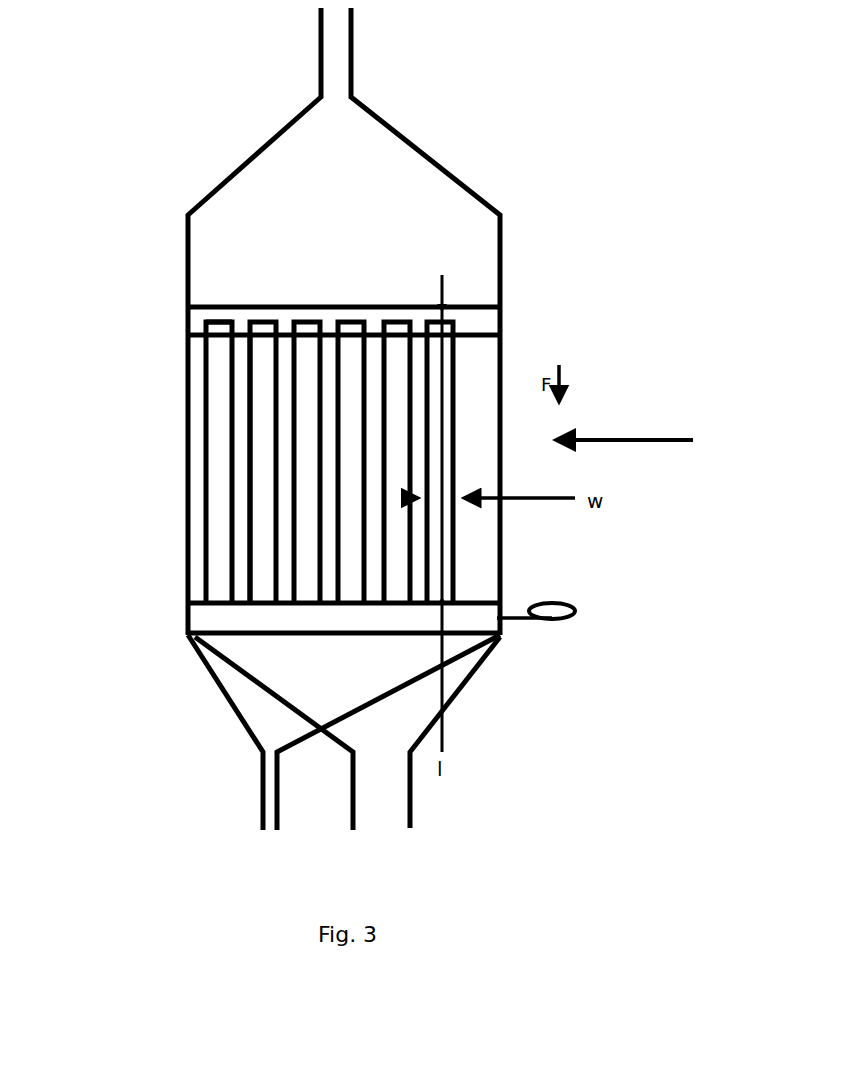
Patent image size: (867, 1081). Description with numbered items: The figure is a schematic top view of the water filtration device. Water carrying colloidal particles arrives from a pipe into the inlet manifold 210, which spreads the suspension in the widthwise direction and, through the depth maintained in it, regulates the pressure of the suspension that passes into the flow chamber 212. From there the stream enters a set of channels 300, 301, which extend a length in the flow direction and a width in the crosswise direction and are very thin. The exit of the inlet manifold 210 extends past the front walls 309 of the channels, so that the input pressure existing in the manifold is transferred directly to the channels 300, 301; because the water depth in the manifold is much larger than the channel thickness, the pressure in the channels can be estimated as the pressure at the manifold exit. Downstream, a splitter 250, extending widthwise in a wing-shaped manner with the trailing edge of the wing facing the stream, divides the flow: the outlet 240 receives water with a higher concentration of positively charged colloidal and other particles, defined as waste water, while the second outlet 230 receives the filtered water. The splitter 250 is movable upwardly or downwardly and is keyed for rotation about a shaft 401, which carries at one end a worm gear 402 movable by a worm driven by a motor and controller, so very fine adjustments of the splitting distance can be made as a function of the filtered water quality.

The inlet manifold 210 is at (382, 231).
The front walls 309 is at (218, 322).
The channel 300 is at (218, 440).
The channel 301 is at (250, 498).
The flow chamber 212 is at (664, 441).
The worm gear 402 is at (546, 602).
The shaft 401 is at (500, 626).
The splitter 250 is at (478, 622).
The outlet 240 is at (273, 820).
The second outlet 230 is at (383, 818).